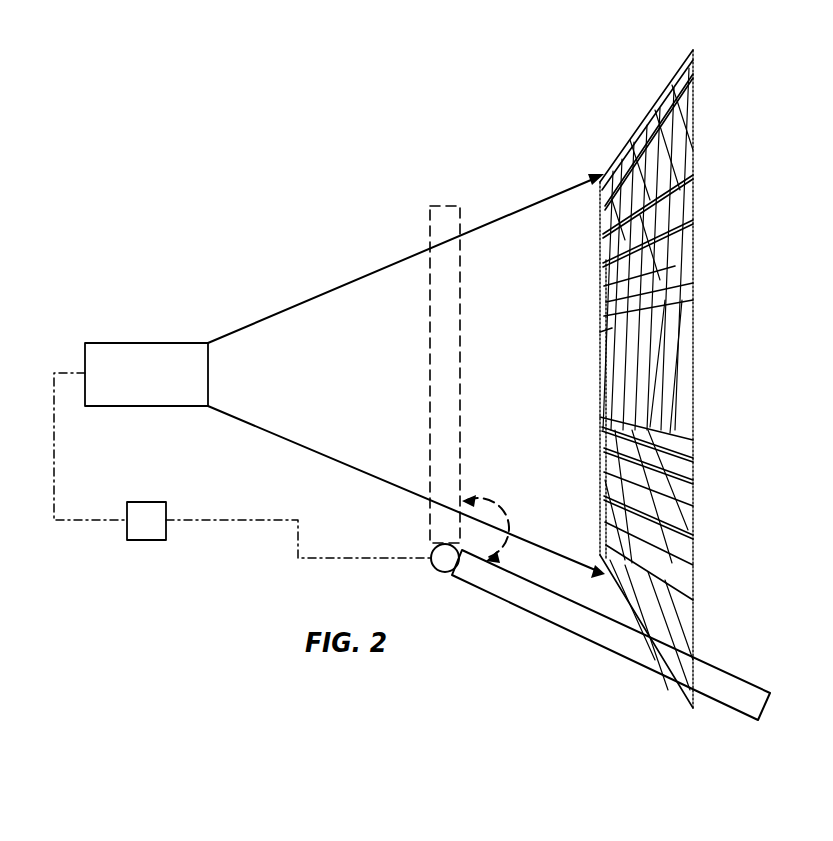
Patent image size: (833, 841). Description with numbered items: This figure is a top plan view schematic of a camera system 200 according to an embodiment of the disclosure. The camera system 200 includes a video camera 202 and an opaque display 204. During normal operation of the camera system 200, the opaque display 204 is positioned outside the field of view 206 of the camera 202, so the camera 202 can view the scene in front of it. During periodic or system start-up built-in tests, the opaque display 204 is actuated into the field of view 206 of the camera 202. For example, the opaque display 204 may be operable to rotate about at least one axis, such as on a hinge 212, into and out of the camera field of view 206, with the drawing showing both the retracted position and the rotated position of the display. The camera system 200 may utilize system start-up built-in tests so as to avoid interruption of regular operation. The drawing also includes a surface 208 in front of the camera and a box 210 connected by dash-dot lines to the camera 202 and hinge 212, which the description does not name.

The camera system 200 is at (280, 182).
The video camera 202 is at (155, 388).
The opaque display 204 is at (424, 222).
The field of view 206 is at (312, 288).
The projection surface / wall 208 is at (604, 160).
The controller 210 is at (153, 502).
The hinge 212 is at (432, 549).